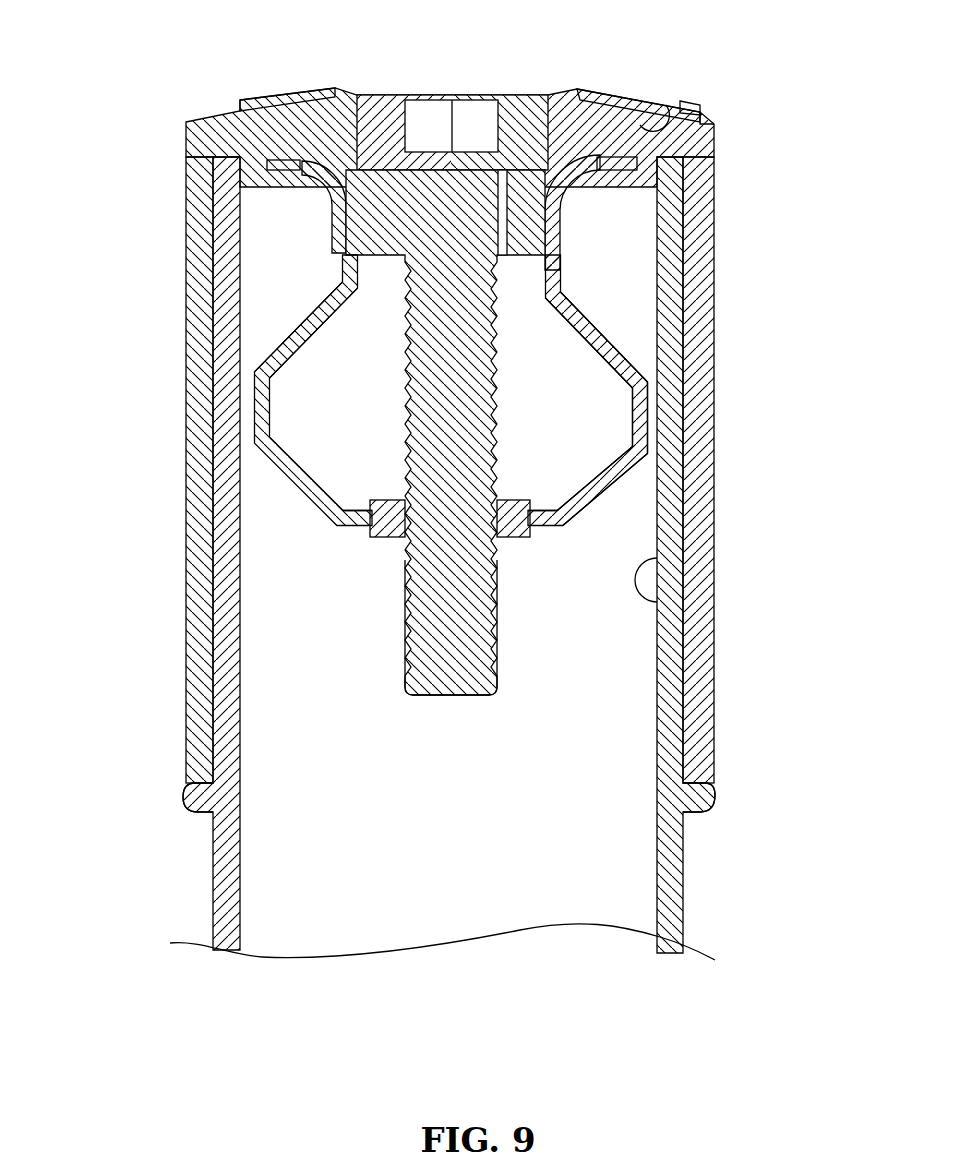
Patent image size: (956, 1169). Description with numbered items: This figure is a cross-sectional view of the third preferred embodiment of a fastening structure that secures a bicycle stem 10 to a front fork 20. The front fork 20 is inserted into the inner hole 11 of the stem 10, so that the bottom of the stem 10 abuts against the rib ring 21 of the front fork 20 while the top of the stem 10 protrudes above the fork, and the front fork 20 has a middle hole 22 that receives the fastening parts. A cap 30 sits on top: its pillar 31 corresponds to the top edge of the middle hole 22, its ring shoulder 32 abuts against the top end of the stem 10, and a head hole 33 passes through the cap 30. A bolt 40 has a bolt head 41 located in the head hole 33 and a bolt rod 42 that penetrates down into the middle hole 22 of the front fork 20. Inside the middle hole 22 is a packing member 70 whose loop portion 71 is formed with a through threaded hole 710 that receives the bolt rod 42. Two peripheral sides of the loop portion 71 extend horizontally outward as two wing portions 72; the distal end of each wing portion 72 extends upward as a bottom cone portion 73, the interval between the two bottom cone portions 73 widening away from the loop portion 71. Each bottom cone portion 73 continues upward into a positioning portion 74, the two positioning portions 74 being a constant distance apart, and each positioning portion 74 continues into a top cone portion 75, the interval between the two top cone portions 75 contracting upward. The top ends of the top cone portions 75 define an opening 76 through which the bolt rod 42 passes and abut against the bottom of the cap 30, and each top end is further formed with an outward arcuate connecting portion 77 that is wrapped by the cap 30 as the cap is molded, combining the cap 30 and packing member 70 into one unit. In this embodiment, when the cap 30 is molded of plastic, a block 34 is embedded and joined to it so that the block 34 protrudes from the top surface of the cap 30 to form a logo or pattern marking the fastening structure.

The stem 10 is at (720, 470).
The inner hole 11 is at (716, 598).
The front fork 20 is at (212, 892).
The rib ring 21 is at (190, 800).
The middle hole 22 is at (238, 888).
The cap 30 is at (650, 100).
The pillar 31 is at (716, 177).
The ring shoulder 32 is at (203, 160).
The head hole 33 is at (385, 108).
The block 34 is at (690, 103).
The bolt 40 is at (398, 407).
The bolt head 41 is at (525, 105).
The bolt rod 42 is at (405, 622).
The packing member 70 is at (562, 545).
The loop portion 71 is at (497, 505).
The wing portion 72 is at (540, 512).
The bottom cone portion 73 is at (600, 523).
The positioning portion 74 is at (648, 412).
The top cone portion 75 is at (560, 292).
The opening 76 is at (380, 292).
The connecting portion 77 is at (300, 100).
The through threaded hole 710 is at (490, 503).